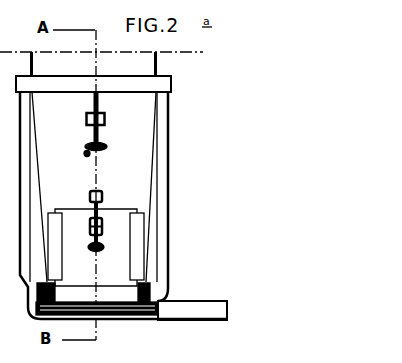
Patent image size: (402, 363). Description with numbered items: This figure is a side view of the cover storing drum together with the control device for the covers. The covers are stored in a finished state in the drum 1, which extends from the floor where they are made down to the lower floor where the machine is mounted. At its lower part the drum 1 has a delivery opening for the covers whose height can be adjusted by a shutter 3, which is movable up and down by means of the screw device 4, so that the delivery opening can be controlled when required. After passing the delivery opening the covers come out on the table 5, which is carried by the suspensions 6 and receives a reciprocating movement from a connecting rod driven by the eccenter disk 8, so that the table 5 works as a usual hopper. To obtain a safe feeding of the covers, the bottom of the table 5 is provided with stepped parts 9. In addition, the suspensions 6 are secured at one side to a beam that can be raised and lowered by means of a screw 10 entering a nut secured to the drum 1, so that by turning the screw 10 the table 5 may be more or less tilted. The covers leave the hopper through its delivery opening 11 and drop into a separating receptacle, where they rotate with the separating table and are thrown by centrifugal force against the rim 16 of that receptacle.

The rim 16 is at (161, 86).
The screw 10 is at (105, 128).
The suspensions 6 is at (105, 158).
The drum 1 is at (27, 192).
The screw device 4 is at (133, 178).
The shutter 3 is at (115, 230).
The eccenter disk 8 is at (73, 295).
The stepped parts 9 is at (118, 300).
The table 5 is at (175, 315).
The delivery opening 11 is at (217, 314).